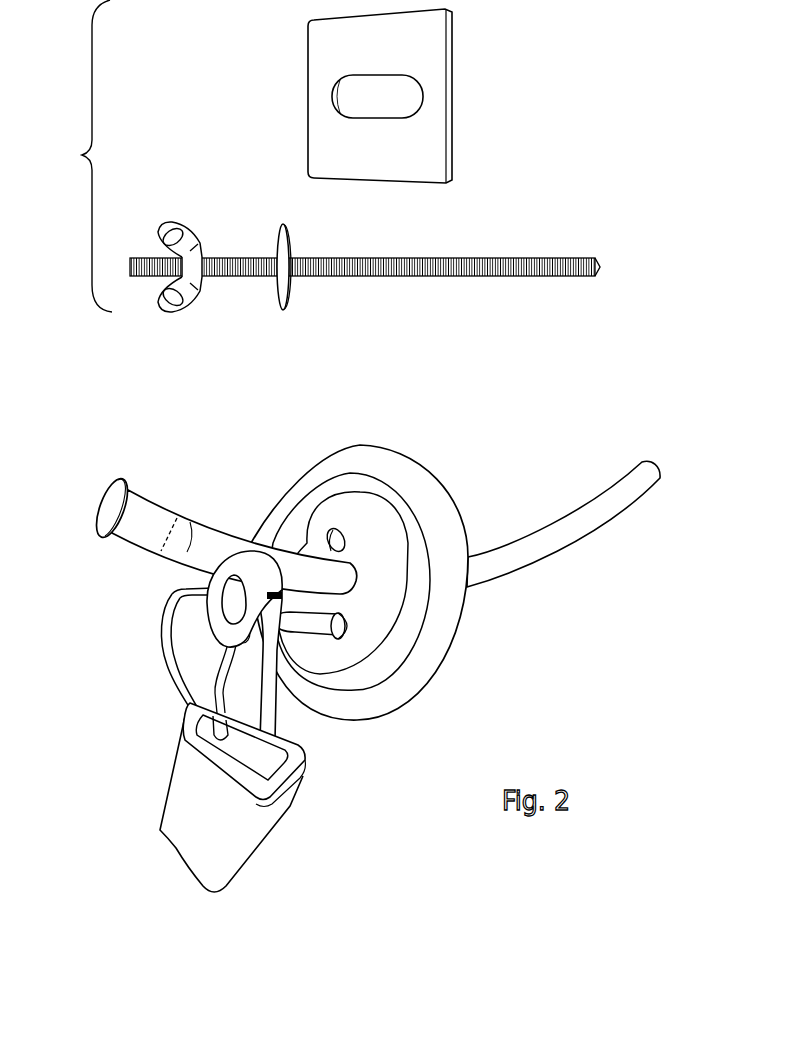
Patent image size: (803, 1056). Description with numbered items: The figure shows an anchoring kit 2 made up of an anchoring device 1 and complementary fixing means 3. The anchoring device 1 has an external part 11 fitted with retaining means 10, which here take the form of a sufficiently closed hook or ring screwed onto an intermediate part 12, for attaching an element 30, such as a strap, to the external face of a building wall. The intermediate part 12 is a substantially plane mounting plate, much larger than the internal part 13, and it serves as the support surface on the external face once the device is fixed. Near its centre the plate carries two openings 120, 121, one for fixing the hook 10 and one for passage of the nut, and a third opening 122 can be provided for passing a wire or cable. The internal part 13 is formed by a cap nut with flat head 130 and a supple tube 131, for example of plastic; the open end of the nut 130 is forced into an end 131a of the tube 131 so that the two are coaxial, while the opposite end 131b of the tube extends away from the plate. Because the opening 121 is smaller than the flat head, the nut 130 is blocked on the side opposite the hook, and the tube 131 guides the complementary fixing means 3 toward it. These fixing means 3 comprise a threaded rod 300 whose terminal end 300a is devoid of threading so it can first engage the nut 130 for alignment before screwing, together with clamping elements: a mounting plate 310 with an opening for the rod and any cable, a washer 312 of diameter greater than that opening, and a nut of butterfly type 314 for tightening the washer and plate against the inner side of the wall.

The anchoring device 1 is at (476, 451).
The anchoring kit 2 is at (84, 202).
The complementary fixing means 3 is at (86, 156).
The retaining means 10 is at (313, 624).
The external part 11 is at (351, 760).
The intermediate part 12 is at (395, 698).
The internal part 13 is at (205, 428).
The element 30 is at (188, 852).
The opening 120 is at (353, 633).
The opening 121 is at (357, 578).
The third opening 122 is at (335, 529).
The cap nut with flat head 130 is at (128, 486).
The supple tube 131 is at (190, 520).
The end of the tube 131a is at (149, 502).
The rear end 131b is at (634, 467).
The threaded rod 300 is at (393, 297).
The terminal end 300a is at (603, 265).
The mounting plate 310 is at (443, 115).
The washer 312 is at (283, 238).
The nut of butterfly type 314 is at (167, 227).